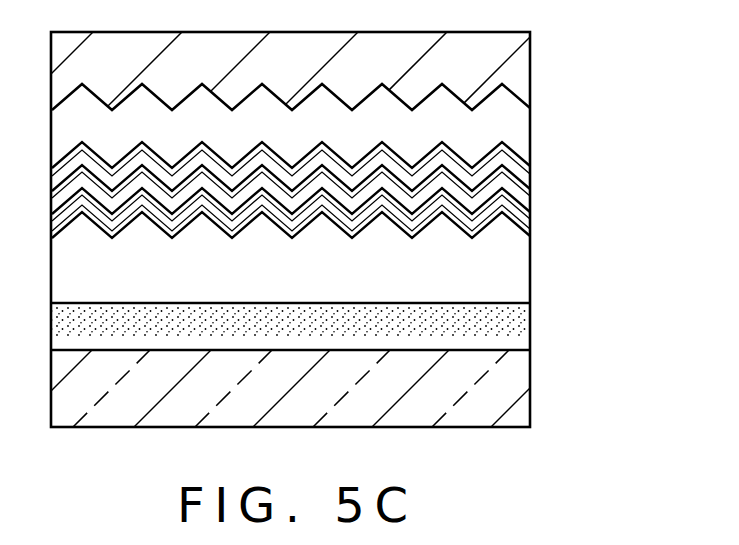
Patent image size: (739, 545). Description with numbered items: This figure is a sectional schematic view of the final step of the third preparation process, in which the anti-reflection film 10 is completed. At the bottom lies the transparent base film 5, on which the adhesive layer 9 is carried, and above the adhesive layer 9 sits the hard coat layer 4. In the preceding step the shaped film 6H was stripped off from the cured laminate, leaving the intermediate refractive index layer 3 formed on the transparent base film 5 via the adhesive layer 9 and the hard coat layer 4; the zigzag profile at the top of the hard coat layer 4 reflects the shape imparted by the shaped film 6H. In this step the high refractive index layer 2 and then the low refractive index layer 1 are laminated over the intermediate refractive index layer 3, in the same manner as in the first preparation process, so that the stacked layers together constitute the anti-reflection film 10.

The anti-reflection film 10 is at (469, 432).
The shaped film 6H is at (522, 72).
The low refractive index layer 1 is at (522, 168).
The high refractive index layer 2 is at (522, 200).
The intermediate refractive index layer 3 is at (522, 225).
The hard coat layer 4 is at (522, 255).
The adhesive layer 9 is at (520, 318).
The transparent base film 5 is at (520, 375).